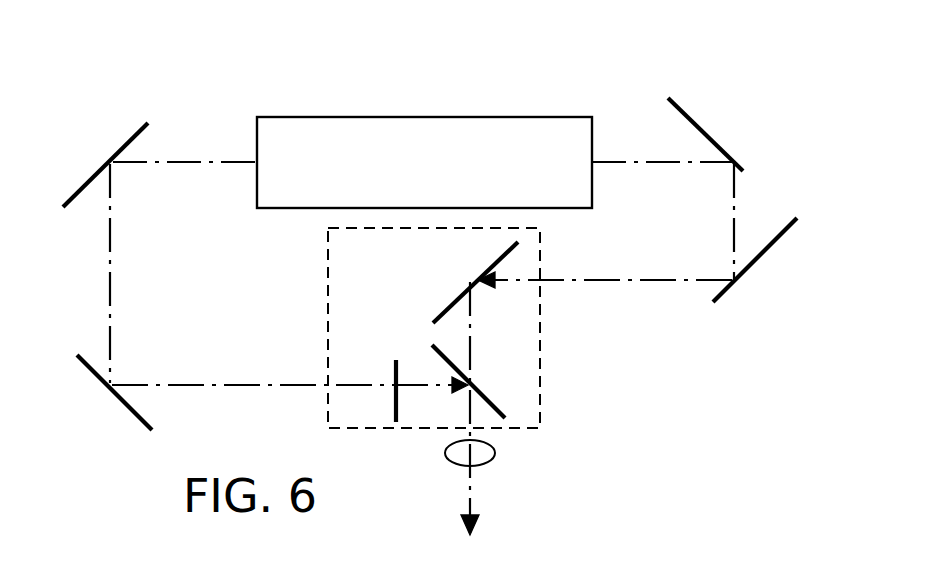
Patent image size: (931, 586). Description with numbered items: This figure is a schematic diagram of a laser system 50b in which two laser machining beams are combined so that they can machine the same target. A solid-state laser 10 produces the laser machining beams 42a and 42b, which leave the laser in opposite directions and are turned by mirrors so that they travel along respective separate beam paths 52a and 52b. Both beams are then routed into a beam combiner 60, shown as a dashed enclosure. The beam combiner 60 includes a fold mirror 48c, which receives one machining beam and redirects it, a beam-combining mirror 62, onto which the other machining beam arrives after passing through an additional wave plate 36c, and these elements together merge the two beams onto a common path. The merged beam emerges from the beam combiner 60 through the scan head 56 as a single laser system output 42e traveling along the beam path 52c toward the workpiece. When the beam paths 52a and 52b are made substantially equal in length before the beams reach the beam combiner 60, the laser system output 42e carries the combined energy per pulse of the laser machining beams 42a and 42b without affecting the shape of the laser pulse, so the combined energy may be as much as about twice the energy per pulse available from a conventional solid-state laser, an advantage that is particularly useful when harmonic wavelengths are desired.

The laser 10 is at (497, 117).
The beam path 52a is at (203, 158).
The beam path 52b is at (623, 148).
The beam path 52c is at (470, 508).
The fold mirror 48c is at (462, 291).
The laser machining beam 42a is at (112, 252).
The laser machining beam 42b is at (735, 230).
The laser system output 42e is at (470, 497).
The laser system 50b is at (688, 75).
The beam combiner 60 is at (545, 353).
The beam-combining mirror 62 is at (452, 364).
The wave plate 36c is at (398, 422).
The scan head 56 is at (495, 453).